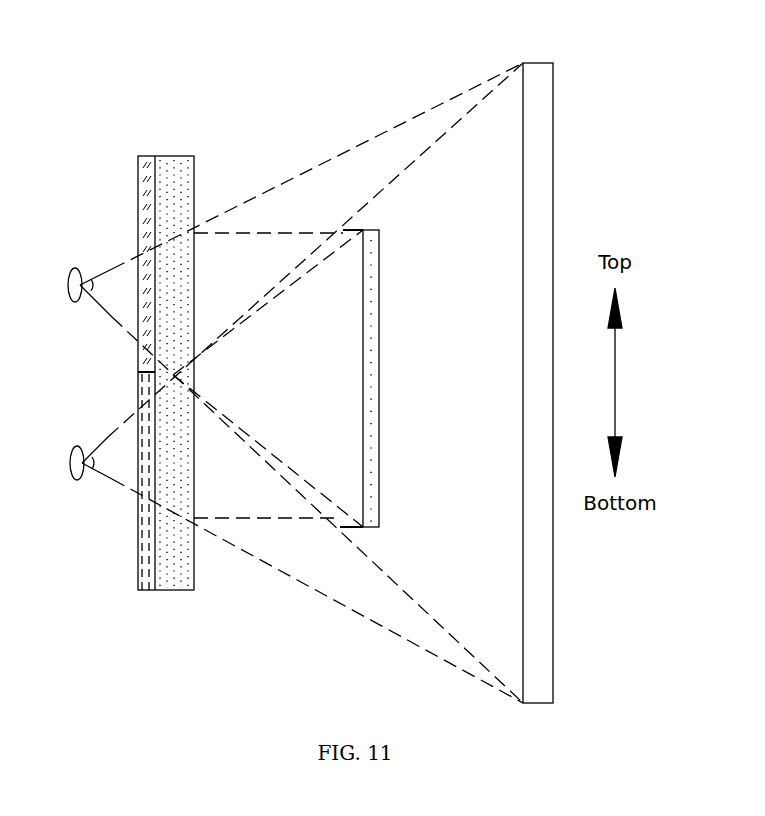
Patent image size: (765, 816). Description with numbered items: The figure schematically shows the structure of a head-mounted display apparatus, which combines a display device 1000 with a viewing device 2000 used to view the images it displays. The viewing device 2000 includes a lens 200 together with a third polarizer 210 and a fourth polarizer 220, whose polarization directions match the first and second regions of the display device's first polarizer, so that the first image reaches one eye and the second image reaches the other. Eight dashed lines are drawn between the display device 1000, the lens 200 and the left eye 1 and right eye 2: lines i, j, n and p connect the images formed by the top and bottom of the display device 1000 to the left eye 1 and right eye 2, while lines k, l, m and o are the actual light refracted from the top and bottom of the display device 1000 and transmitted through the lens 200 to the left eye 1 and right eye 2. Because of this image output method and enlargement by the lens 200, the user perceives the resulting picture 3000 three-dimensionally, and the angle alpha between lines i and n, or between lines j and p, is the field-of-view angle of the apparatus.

The left eye 1 is at (78, 267).
The right eye 2 is at (77, 481).
The lens 200 is at (197, 168).
The third polarizer 210 is at (148, 560).
The fourth polarizer 220 is at (148, 190).
The display device 1000 is at (378, 506).
The viewing device 2000 is at (213, 70).
The resulting picture 3000 is at (540, 197).